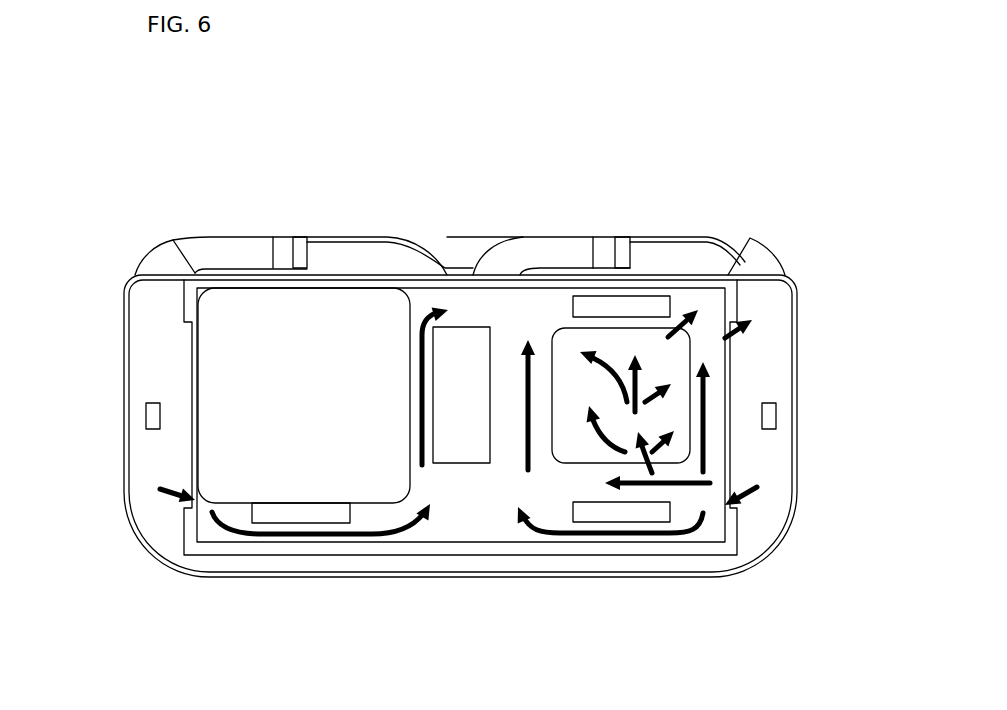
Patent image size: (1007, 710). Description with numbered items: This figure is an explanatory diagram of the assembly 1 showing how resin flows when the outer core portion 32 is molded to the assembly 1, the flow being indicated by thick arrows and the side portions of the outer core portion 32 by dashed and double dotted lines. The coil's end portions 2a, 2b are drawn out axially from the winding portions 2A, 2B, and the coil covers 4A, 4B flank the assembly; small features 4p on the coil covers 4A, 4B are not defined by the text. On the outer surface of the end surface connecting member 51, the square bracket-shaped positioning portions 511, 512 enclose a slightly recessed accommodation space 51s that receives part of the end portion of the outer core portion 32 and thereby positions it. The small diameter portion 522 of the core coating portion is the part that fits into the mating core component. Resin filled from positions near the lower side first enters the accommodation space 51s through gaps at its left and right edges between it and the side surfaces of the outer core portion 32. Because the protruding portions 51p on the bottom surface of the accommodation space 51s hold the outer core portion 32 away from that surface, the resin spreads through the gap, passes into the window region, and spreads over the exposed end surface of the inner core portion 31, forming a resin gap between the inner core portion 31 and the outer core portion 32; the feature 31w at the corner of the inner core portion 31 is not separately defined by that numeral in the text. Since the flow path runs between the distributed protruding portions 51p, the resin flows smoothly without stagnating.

The assembly 1 is at (312, 190).
The end portion of the coil 2a is at (292, 238).
The end portion of the coil 2b is at (622, 240).
The winding portion 2A is at (370, 237).
The winding portion 2B is at (660, 237).
The coil cover 4A is at (153, 262).
The coil cover 4B is at (757, 253).
The projection 4p is at (147, 425).
The inner core portion 31 is at (582, 442).
The wall of heat generating component 31w is at (557, 337).
The outer core portion 32 is at (727, 387).
The end surface connecting member 51 is at (123, 328).
The positioning portion 511 is at (465, 287).
The positioning portion 512 is at (222, 556).
The protruding portion 51p is at (593, 305).
The accommodation space 51s is at (438, 532).
The small diameter portion 522 is at (258, 342).